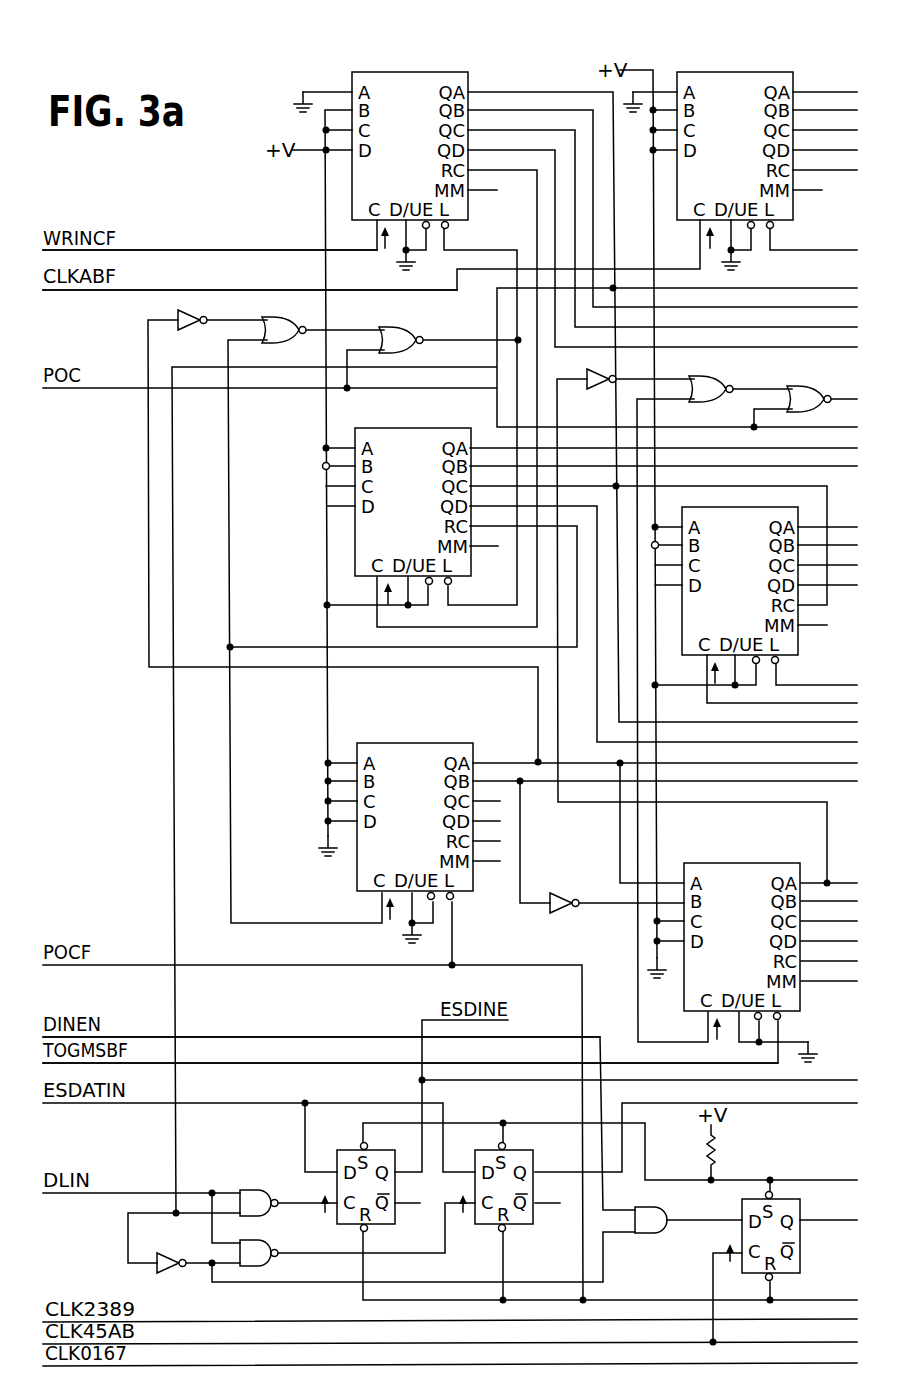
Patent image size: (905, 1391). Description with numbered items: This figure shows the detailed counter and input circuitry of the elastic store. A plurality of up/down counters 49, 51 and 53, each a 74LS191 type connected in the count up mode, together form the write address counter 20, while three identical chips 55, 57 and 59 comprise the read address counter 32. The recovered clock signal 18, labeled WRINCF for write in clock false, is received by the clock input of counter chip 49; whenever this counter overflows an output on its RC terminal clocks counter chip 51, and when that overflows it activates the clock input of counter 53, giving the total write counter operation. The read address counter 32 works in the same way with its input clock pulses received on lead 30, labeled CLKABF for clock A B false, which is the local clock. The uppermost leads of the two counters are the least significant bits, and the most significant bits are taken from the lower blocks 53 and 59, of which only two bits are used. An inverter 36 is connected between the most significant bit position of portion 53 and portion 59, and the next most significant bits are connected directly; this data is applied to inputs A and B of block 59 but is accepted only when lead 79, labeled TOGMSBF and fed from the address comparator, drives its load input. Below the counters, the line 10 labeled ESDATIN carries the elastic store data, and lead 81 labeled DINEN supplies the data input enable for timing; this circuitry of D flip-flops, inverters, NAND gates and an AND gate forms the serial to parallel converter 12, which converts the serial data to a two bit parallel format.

The write address counter 20 is at (410, 129).
The read address counter 32 is at (735, 129).
The up/down counter chip 49 is at (398, 161).
The up/down counter chip 51 is at (401, 517).
The up/down counter chip 53 is at (403, 832).
The counter chip 55 is at (723, 161).
The counter chip 57 is at (728, 596).
The counter chip 59 is at (730, 952).
The inverter 36 is at (562, 893).
The recovered clock signal 18 is at (148, 250).
The local clock lead 30 is at (133, 292).
The data input enable lead 81 is at (212, 1037).
The TOGMSBF lead 79 is at (237, 1063).
The elastic store data input line 10 is at (272, 1105).
The serial to parallel converter 12 is at (820, 1150).